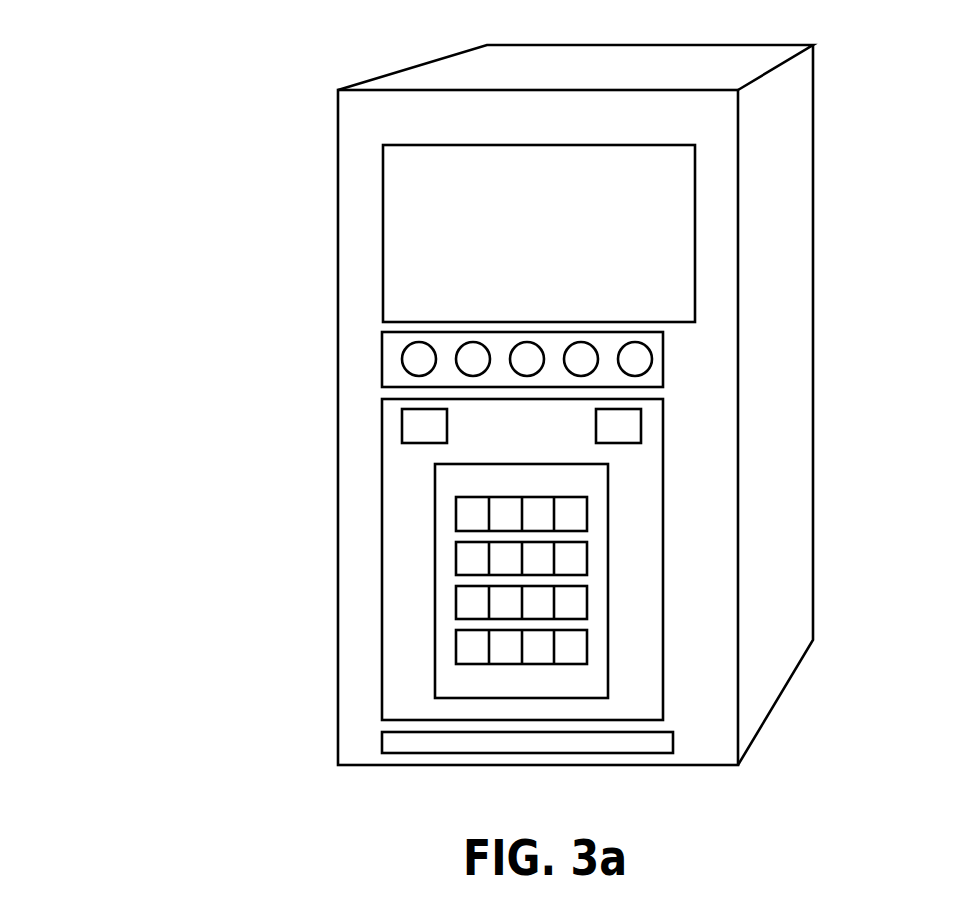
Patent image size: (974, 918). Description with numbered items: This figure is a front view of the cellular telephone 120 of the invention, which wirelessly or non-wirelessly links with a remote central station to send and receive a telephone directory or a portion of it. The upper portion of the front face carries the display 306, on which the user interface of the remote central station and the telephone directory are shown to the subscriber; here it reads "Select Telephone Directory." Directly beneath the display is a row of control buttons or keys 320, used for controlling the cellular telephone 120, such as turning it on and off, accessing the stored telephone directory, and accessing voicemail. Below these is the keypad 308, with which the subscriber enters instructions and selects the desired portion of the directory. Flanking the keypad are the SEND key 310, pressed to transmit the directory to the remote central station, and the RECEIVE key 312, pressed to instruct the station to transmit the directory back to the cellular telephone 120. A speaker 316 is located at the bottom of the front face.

The cellular telephone 120 is at (232, 157).
The display 306 is at (695, 233).
The control buttons or keys 320 is at (382, 364).
The keypad 308 is at (382, 597).
The SEND key 310 is at (402, 432).
The RECEIVE key 312 is at (641, 419).
The speaker 316 is at (382, 743).